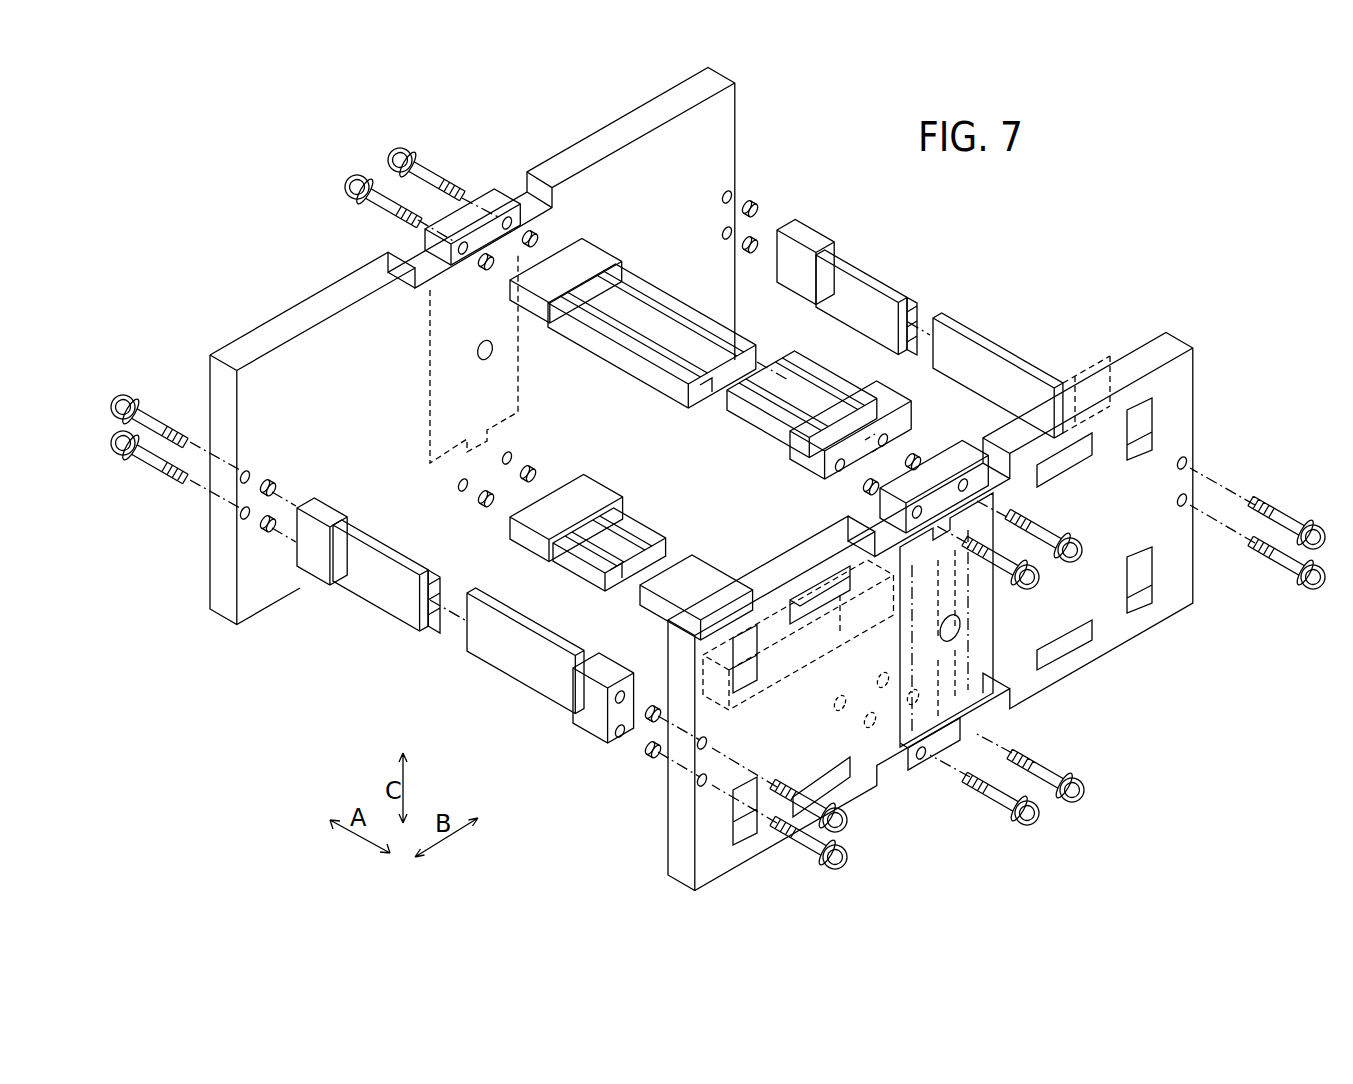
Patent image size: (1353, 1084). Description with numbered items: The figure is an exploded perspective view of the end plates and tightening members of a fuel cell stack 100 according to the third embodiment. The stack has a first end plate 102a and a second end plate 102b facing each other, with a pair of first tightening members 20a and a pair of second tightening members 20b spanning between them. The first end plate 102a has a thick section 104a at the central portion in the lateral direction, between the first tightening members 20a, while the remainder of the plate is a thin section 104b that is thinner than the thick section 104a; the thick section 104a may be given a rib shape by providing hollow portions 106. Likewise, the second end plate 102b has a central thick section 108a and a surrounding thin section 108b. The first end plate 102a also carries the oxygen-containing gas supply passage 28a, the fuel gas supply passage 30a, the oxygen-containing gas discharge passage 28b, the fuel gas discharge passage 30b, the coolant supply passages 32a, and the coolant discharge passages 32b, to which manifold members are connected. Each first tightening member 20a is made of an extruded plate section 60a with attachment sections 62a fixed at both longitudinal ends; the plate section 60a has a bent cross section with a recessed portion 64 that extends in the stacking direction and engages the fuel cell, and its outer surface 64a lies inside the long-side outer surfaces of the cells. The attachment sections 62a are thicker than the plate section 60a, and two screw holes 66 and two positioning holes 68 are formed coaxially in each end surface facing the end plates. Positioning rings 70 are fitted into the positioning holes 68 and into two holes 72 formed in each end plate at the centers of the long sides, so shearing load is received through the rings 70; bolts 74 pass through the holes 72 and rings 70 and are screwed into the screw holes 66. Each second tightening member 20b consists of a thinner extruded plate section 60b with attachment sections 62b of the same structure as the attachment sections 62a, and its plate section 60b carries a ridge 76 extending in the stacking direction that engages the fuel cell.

The fuel cell stack 100 is at (1160, 212).
The first end plate 102a is at (1128, 339).
The second end plate 102b is at (236, 329).
The thick section 104a is at (1012, 700).
The thin section 104b is at (1190, 590).
The hollow portions 106 is at (952, 745).
The thick section 108a is at (430, 405).
The thin section 108b is at (315, 303).
The first tightening member 20a is at (724, 432).
The second tightening member 20b is at (691, 477).
The oxygen-containing gas supply passage 28a is at (1140, 415).
The oxygen-containing gas discharge passage 28b is at (745, 825).
The fuel gas supply passage 30a is at (1140, 605).
The fuel gas discharge passage 30b is at (745, 675).
The coolant supply passages 32a is at (1060, 472).
The coolant discharge passages 32b is at (818, 585).
The plate section 60a is at (763, 440).
The plate section 60b is at (392, 590).
The attachment sections 62a is at (582, 255).
The attachment sections 62b is at (324, 568).
The recessed portion 64 is at (712, 398).
The outer surface 64a is at (702, 345).
The screw holes 66 is at (872, 440).
The positioning holes 68 is at (895, 440).
The positioning rings 70 is at (910, 470).
The holes 72 is at (962, 470).
The bolts 74 is at (352, 182).
The ridge 76 is at (438, 612).